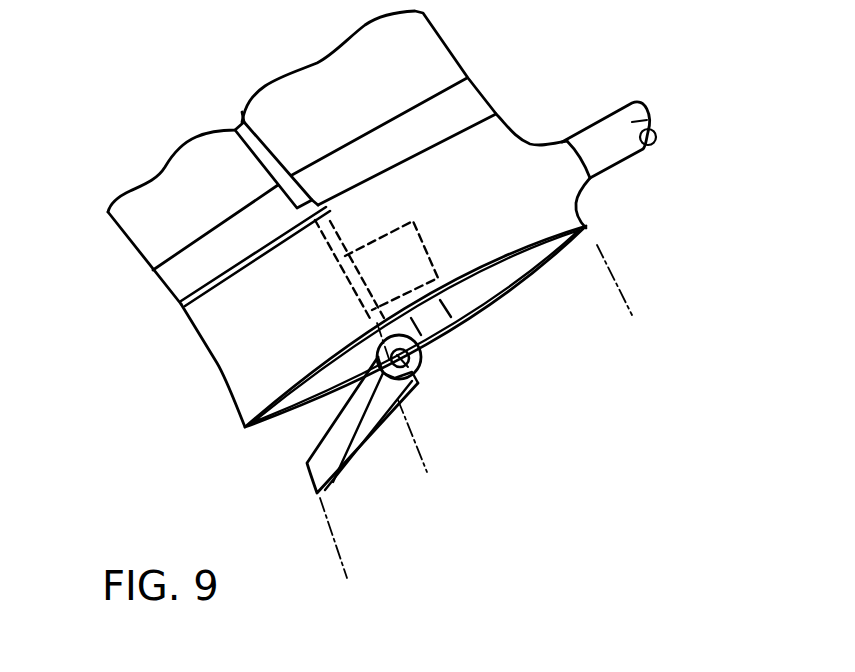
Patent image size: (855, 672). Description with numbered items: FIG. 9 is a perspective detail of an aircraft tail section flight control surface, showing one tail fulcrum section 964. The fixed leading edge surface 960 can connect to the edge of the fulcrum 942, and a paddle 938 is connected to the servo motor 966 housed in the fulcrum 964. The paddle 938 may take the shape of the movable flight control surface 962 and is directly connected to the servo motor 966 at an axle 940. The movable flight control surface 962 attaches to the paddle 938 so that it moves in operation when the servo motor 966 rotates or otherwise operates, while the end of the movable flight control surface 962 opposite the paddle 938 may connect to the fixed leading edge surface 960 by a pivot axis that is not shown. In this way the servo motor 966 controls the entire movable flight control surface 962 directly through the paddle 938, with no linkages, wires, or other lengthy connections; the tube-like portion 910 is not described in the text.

The connector tube 910 is at (643, 125).
The paddle 938 is at (188, 277).
The axle 940 is at (420, 387).
The fulcrum 942 is at (512, 293).
The fixed leading edge surface 960 is at (404, 108).
The movable flight control surface 962 is at (210, 208).
The tail fulcrum section 964 is at (237, 430).
The servo motor 966 is at (410, 241).